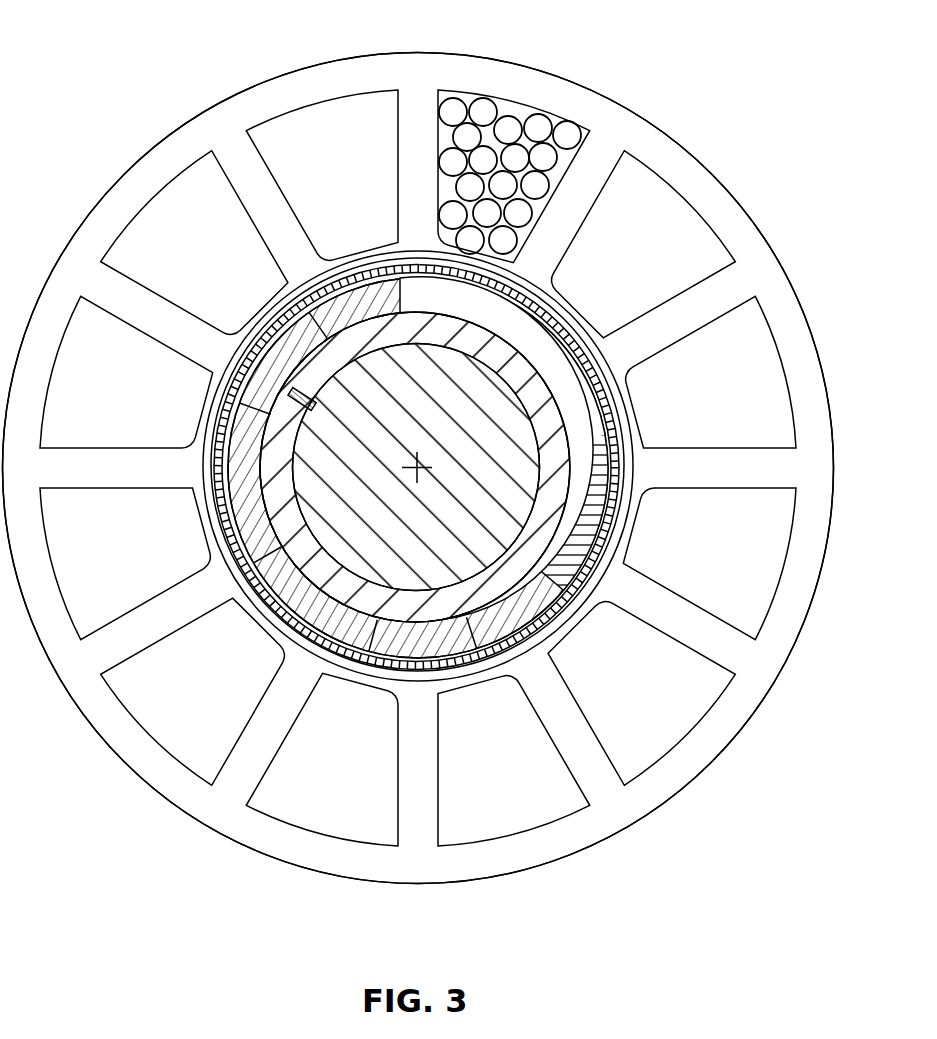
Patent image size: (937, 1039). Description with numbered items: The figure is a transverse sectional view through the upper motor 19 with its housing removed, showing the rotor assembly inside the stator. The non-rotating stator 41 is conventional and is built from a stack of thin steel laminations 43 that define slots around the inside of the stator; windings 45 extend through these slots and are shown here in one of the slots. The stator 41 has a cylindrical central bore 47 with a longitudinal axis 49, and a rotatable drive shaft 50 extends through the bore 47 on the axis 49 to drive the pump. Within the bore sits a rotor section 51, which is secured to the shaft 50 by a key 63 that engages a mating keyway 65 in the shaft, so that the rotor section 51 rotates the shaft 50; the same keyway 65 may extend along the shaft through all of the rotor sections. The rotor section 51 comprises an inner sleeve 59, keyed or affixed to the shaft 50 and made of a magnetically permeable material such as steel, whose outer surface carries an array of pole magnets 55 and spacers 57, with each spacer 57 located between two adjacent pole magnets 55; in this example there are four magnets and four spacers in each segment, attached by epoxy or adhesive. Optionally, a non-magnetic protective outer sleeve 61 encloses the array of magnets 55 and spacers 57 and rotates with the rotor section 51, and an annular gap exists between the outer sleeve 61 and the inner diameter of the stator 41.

The upper motor 19 is at (690, 116).
The stator 41 is at (700, 152).
The laminations 43 is at (735, 228).
The windings 45 is at (538, 126).
The central bore 47 is at (547, 312).
The longitudinal axis 49 is at (428, 478).
The drive shaft 50 is at (307, 492).
The rotor section 51 is at (785, 282).
The pole magnets 55 is at (547, 604).
The spacers 57 is at (572, 418).
The inner sleeve 59 is at (317, 570).
The outer sleeve 61 is at (405, 668).
The key 63 is at (317, 365).
The keyway 65 is at (298, 401).